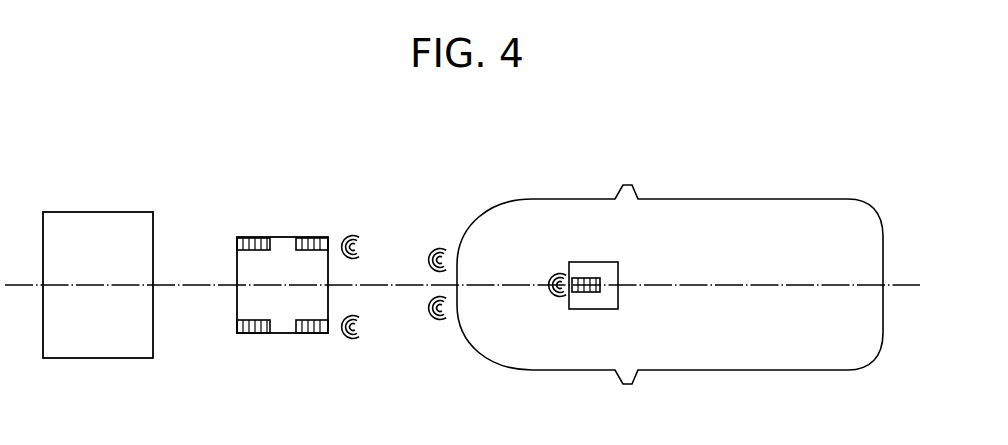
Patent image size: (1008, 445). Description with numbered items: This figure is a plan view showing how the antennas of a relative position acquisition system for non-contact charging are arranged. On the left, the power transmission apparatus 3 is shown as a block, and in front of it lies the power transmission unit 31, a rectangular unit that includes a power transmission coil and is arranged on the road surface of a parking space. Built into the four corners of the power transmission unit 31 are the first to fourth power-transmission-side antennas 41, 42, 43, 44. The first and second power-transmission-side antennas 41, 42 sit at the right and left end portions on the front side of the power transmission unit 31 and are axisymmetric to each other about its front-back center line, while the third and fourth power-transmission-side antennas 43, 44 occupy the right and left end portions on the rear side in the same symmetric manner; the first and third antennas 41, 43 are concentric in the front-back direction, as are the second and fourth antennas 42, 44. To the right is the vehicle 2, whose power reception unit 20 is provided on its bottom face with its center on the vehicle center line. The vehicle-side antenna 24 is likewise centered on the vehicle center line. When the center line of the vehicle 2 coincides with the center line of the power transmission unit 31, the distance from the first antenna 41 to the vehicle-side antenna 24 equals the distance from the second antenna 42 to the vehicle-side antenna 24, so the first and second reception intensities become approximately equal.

The vehicle 2 is at (745, 198).
The power transmission apparatus 3 is at (126, 195).
The power reception unit 20 is at (612, 262).
The vehicle-side antenna 24 is at (590, 278).
The power transmission unit 31 is at (283, 237).
The first power-transmission-side antenna 41 is at (250, 237).
The second power-transmission-side antenna 42 is at (250, 333).
The third power-transmission-side antenna 43 is at (315, 237).
The fourth power-transmission-side antenna 44 is at (312, 333).